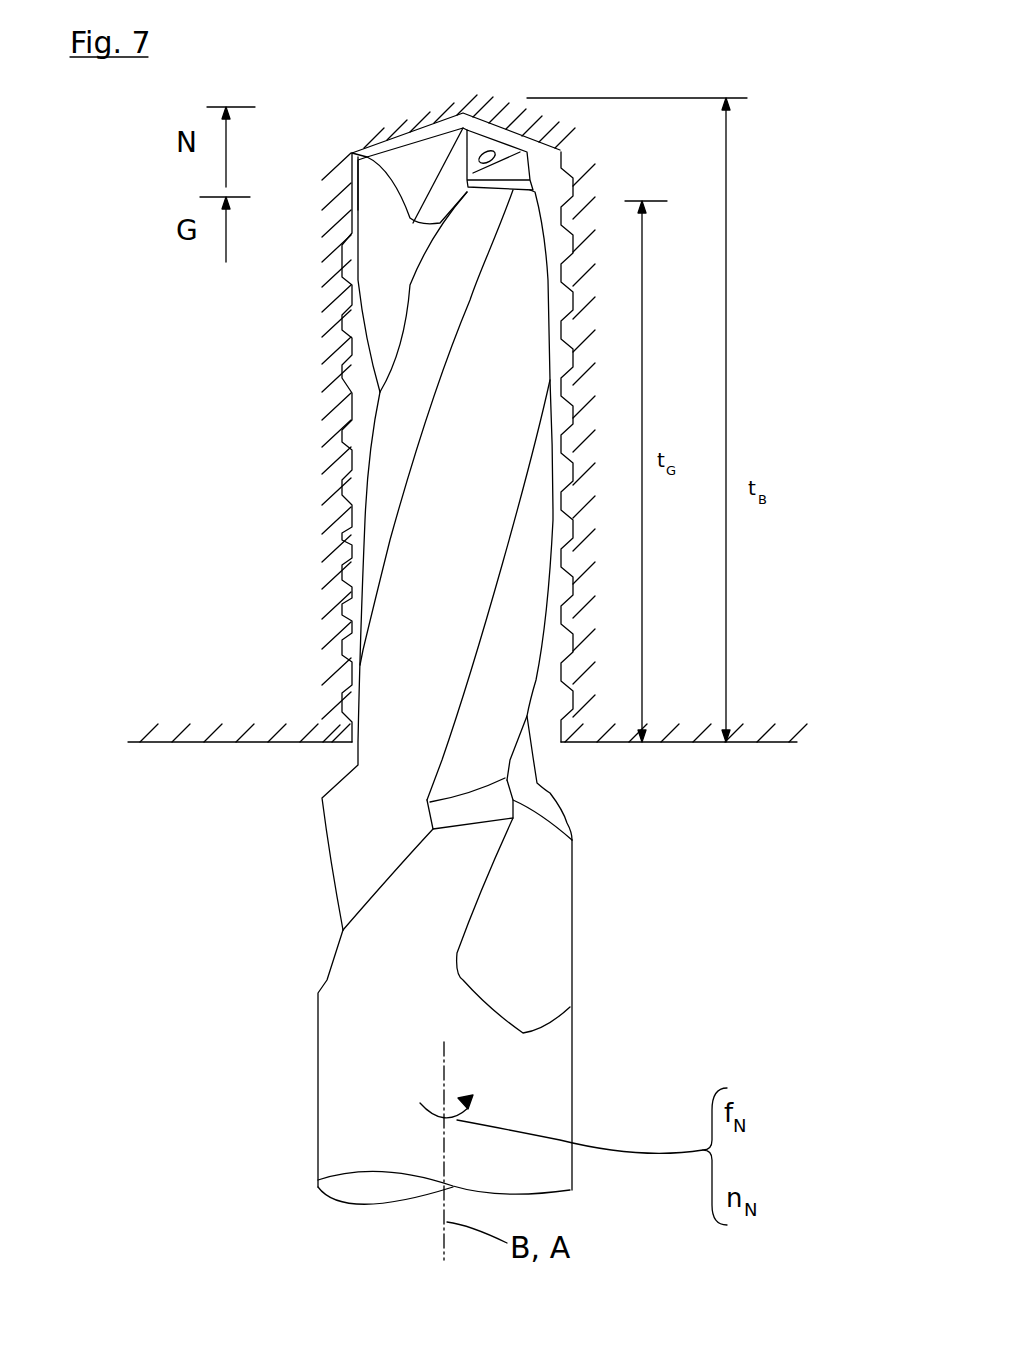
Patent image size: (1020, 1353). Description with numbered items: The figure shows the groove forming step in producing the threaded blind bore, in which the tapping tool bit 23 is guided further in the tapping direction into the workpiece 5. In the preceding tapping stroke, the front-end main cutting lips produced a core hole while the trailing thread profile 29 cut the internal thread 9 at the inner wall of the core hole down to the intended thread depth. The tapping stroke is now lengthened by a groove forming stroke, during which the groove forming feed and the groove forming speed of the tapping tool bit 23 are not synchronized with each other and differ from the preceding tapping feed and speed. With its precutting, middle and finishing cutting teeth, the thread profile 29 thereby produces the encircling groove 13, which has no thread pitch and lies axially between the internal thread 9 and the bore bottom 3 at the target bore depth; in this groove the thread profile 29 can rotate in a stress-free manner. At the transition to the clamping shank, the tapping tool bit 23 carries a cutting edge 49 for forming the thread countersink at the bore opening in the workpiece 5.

The bore bottom 3 is at (440, 120).
The workpiece 5 is at (770, 747).
The internal thread 9 is at (347, 527).
The encircling groove 13 is at (350, 206).
The thread profile 29 is at (368, 150).
The cutting edge 49 is at (567, 827).
The tapping tool bit 23 is at (310, 1022).